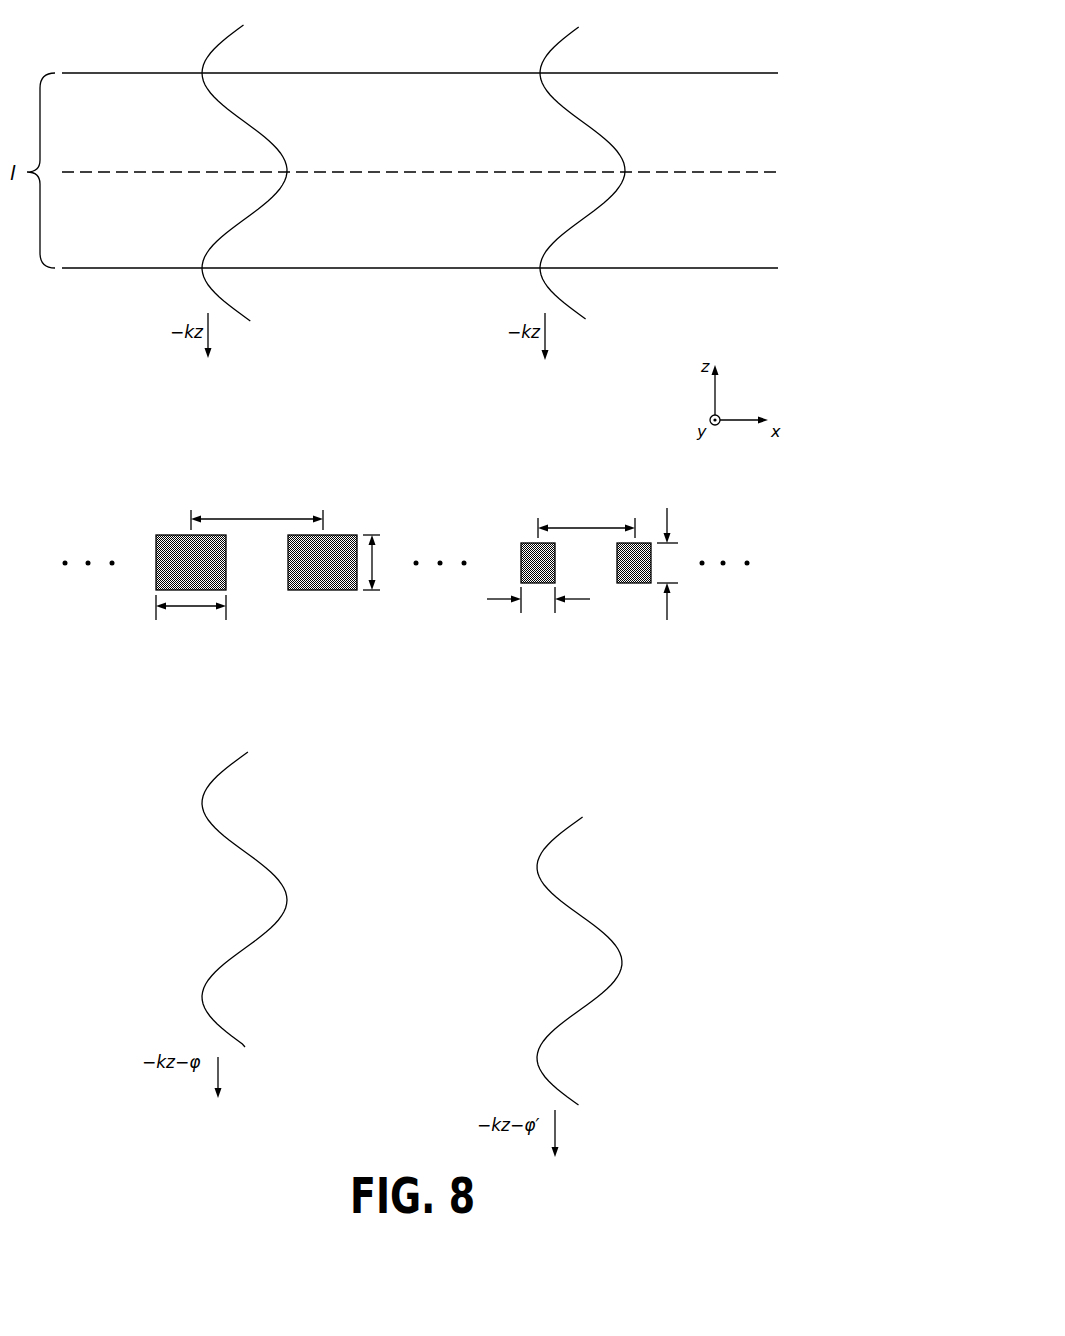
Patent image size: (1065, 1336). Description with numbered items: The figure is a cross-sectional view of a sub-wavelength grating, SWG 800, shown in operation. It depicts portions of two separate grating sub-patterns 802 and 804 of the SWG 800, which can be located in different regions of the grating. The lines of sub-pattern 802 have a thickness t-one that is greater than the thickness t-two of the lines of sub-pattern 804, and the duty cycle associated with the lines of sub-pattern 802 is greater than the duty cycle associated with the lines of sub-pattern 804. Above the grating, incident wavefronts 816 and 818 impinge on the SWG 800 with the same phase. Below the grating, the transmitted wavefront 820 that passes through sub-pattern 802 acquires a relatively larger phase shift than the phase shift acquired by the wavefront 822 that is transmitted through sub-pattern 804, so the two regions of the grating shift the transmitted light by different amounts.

The SWG 800 is at (469, 560).
The grating sub-pattern 802 is at (150, 537).
The grating sub-pattern 804 is at (523, 539).
The incident wavefront 816 is at (213, 50).
The incident wavefront 818 is at (563, 40).
The transmitted wavefront 820 is at (213, 773).
The transmitted wavefront 822 is at (562, 830).